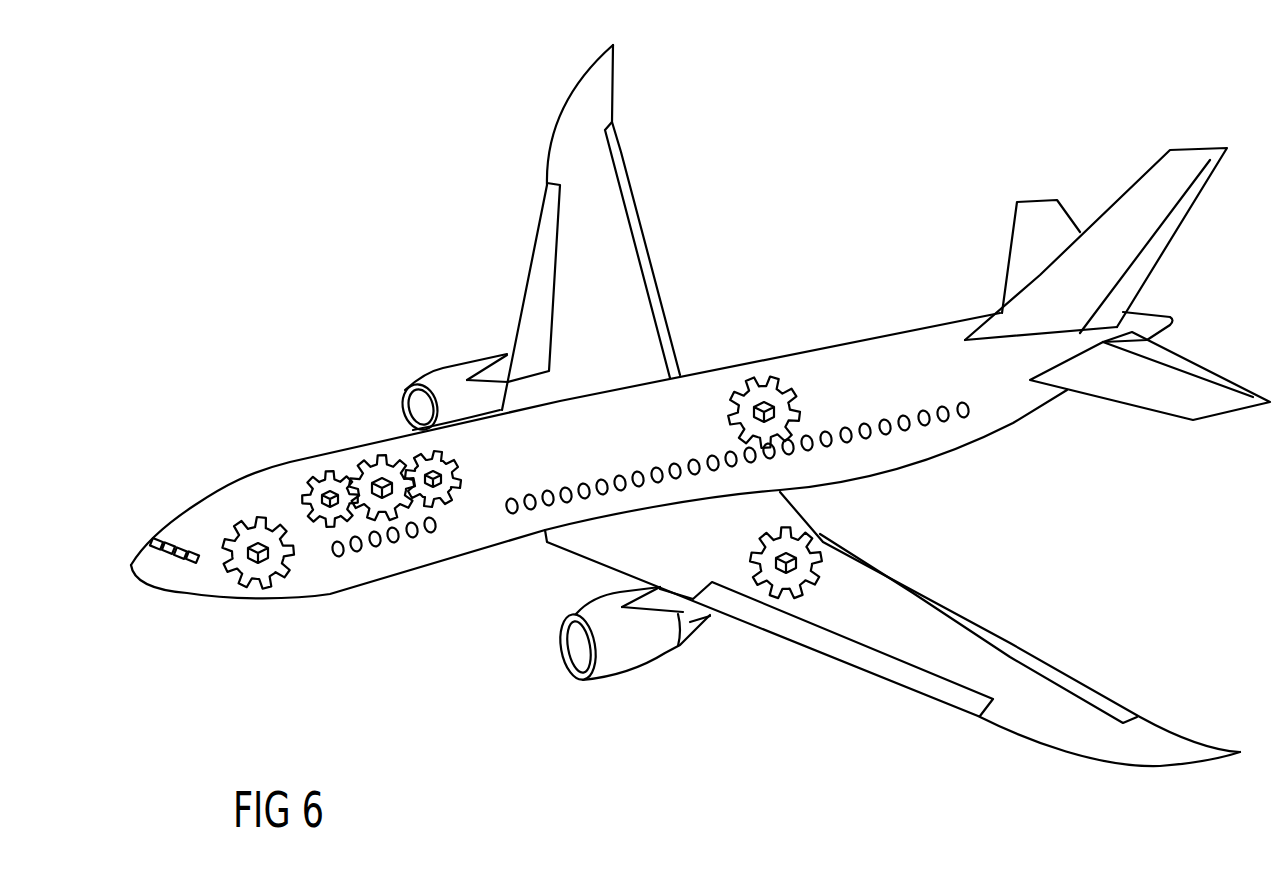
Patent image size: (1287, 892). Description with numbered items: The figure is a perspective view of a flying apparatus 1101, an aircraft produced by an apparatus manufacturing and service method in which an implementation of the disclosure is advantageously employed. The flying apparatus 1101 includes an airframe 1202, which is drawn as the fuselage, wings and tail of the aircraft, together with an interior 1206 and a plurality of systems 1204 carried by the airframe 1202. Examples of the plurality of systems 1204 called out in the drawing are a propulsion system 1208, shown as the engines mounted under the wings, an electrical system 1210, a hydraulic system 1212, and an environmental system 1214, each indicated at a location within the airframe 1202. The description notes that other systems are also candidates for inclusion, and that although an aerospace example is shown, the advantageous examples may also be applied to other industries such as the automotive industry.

The flying apparatus 1101 is at (297, 138).
The airframe 1202 is at (468, 640).
The plurality of systems 1204 is at (870, 297).
The interior 1206 is at (340, 470).
The propulsion system 1208 is at (443, 380).
The electrical system 1210 is at (259, 520).
The hydraulic system 1212 is at (783, 553).
The environmental system 1214 is at (763, 387).